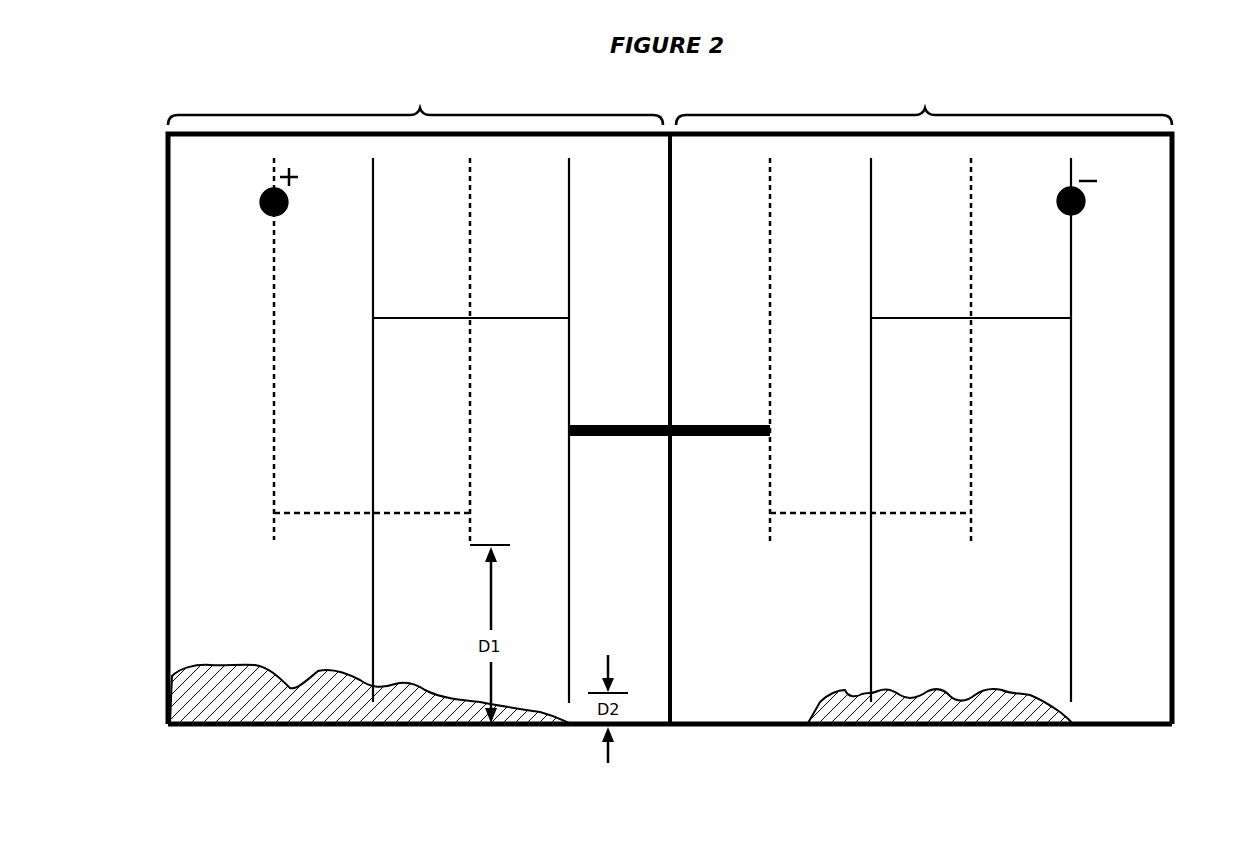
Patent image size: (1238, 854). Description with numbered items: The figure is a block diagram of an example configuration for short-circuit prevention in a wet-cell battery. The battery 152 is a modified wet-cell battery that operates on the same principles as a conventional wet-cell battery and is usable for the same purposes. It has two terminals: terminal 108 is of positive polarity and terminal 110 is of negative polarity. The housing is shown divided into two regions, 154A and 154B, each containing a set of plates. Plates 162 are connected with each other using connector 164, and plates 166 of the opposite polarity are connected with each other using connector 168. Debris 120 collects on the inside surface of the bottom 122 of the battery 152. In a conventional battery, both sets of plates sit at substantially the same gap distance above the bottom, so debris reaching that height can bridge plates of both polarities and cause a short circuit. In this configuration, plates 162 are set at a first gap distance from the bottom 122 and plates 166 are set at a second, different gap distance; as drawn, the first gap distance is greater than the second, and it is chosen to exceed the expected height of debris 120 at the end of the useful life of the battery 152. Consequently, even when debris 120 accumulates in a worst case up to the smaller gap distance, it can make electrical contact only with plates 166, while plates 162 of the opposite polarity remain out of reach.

The battery 152 is at (168, 134).
The bottom 122 is at (768, 728).
The first cell compartment 154A is at (415, 107).
The second cell compartment 154B is at (924, 107).
The terminal 108 is at (261, 203).
The terminal 110 is at (1085, 204).
The plates 162 is at (470, 412).
The plates 166 is at (569, 490).
The connector 168 is at (405, 318).
The connector 164 is at (350, 513).
The debris 120 is at (257, 706).